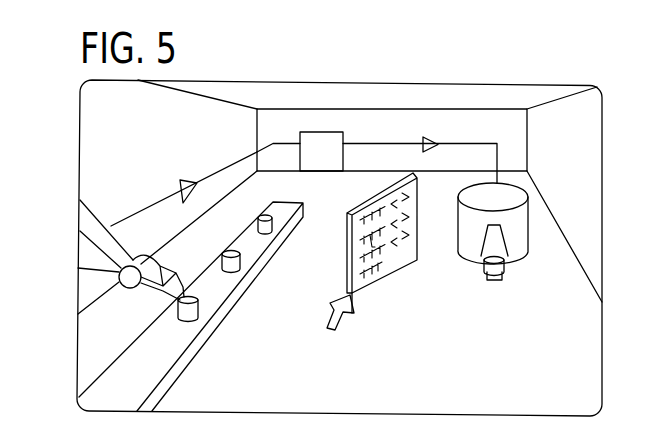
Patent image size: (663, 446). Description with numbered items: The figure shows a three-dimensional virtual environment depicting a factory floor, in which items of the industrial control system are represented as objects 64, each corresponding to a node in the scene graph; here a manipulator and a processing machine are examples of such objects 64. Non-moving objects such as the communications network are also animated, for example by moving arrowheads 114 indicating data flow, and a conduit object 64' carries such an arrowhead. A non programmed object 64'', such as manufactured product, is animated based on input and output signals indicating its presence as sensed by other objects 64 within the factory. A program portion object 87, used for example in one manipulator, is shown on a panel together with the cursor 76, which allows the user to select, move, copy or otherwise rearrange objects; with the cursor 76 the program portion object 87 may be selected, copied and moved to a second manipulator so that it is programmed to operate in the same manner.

The object 64 is at (304, 216).
The object 64' is at (377, 148).
The non programmed object 64'' is at (222, 325).
The moving arrowhead 114 is at (188, 179).
The program portion object 87 is at (411, 260).
The cursor 76 is at (353, 308).